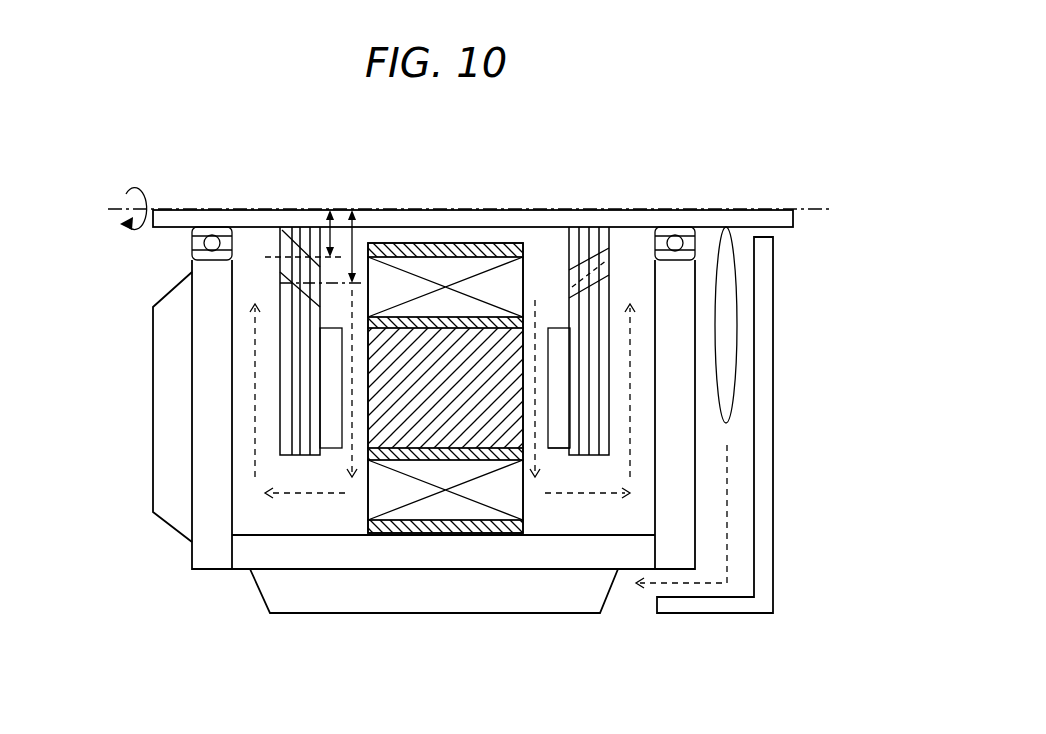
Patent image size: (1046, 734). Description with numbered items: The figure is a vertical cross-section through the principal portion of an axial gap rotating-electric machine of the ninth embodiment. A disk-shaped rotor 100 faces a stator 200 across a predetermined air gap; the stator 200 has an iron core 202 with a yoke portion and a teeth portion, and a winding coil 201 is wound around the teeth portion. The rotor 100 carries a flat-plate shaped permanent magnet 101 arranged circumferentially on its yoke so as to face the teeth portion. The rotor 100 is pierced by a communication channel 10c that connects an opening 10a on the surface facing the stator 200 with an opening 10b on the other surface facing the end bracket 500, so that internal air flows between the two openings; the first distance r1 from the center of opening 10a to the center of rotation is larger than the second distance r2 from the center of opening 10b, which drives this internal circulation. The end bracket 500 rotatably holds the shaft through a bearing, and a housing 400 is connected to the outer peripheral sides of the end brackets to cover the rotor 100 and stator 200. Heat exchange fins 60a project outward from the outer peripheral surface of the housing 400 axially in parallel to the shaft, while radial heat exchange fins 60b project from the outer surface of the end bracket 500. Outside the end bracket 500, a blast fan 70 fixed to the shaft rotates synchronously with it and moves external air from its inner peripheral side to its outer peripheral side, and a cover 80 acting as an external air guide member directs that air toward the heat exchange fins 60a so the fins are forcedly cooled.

The opening 10a is at (290, 288).
The opening 10b is at (284, 252).
The communication channel 10c is at (300, 270).
The first distance r1 is at (352, 209).
The second distance r2 is at (330, 209).
The rotor 100 is at (590, 458).
The permanent magnet 101 is at (550, 442).
The stator 200 is at (475, 400).
The winding coil 201 is at (443, 268).
The iron core 202 is at (483, 352).
The housing 400 is at (295, 569).
The end bracket 500 is at (193, 477).
The heat exchange fins 60a is at (370, 605).
The heat exchange fins 60b is at (162, 406).
The blast fan 70 is at (728, 332).
The cover 80 is at (767, 450).